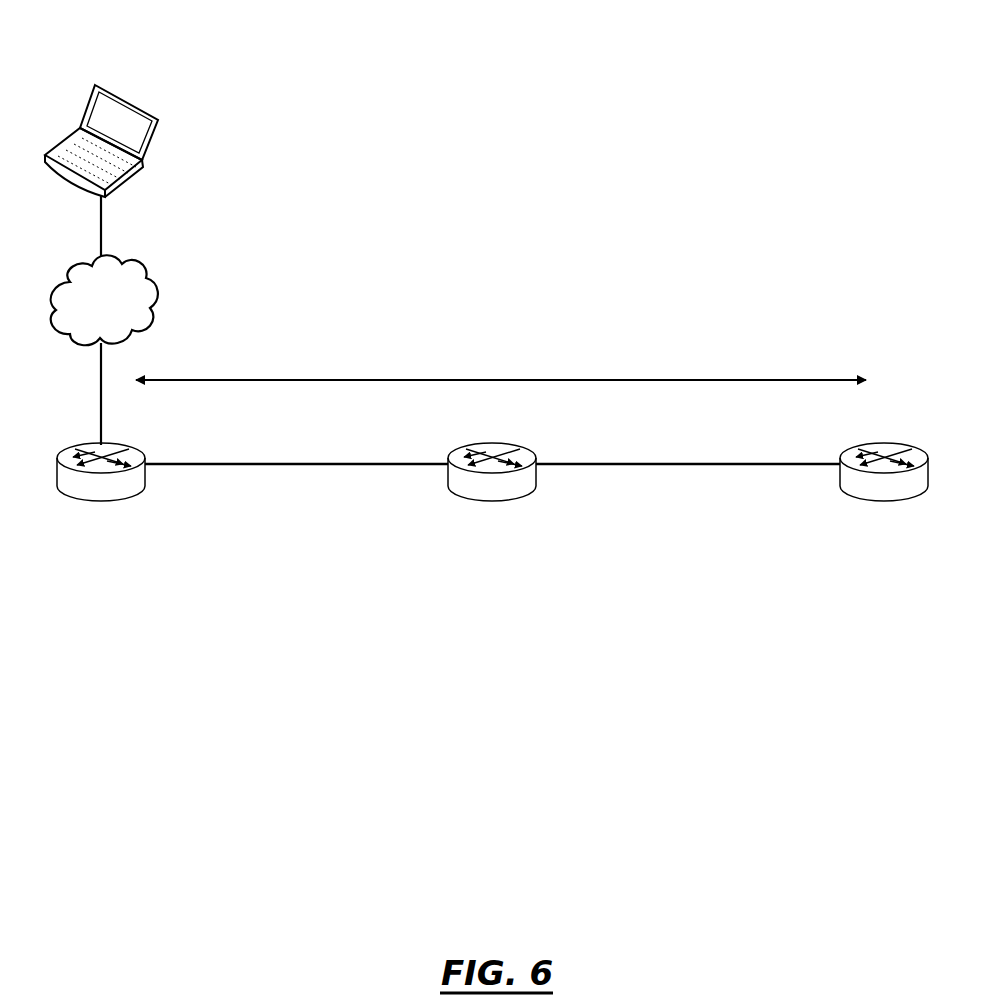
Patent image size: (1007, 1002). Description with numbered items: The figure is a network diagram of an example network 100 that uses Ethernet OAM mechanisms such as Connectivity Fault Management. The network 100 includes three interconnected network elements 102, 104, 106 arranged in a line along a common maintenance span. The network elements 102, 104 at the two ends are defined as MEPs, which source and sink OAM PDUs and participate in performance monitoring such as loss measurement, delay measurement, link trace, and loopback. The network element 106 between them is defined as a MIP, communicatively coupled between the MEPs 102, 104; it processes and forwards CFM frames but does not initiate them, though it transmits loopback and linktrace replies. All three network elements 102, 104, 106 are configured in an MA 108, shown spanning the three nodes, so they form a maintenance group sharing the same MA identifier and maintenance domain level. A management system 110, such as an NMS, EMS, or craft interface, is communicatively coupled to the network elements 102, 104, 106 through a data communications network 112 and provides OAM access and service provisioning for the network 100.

The network 100 is at (563, 100).
The network element 102 is at (93, 560).
The network element 104 is at (878, 556).
The network element 106 is at (488, 558).
The Maintenance Association 108 is at (516, 333).
The management system 110 is at (144, 70).
The data communications network 112 is at (158, 300).